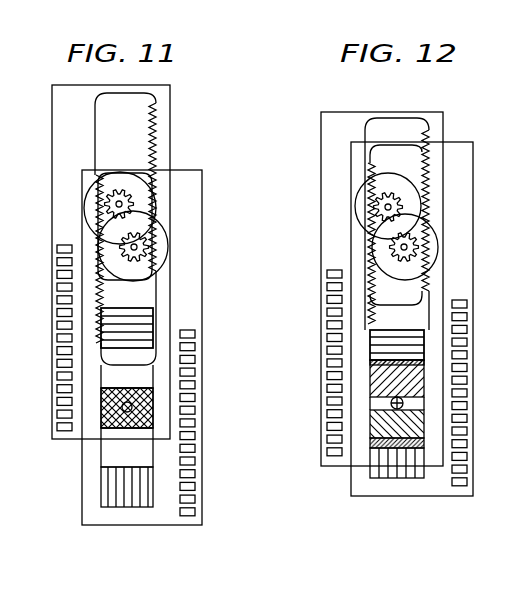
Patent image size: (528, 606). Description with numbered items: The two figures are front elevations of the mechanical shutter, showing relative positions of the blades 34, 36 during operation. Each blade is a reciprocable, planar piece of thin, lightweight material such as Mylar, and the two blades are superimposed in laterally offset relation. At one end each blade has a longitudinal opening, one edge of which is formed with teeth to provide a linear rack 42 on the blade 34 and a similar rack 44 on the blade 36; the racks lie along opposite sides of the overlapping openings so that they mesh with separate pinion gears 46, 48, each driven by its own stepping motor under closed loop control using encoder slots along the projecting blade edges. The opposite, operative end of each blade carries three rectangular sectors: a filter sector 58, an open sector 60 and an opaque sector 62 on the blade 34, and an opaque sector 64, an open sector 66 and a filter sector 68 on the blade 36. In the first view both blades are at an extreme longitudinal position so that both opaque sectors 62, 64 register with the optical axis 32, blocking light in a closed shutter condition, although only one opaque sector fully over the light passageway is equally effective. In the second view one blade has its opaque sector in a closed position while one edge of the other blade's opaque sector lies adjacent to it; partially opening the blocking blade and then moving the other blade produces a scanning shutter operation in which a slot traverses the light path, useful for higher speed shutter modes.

In FIG. 11, the optical axis 32 is at (128, 412).
In FIG. 12, the optical axis 32 is at (390, 403).
In FIG. 11, the blade 34 is at (66, 104).
In FIG. 12, the blade 34 is at (333, 118).
In FIG. 11, the blade 36 is at (187, 178).
In FIG. 12, the blade 36 is at (455, 147).
In FIG. 11, the linear rack 42 is at (150, 115).
In FIG. 12, the linear rack 42 is at (417, 130).
In FIG. 11, the rack 44 is at (104, 290).
In FIG. 12, the rack 44 is at (374, 162).
In FIG. 11, the pinion gear 46 is at (117, 245).
In FIG. 12, the pinion gear 46 is at (403, 252).
In FIG. 11, the pinion gear 48 is at (118, 204).
In FIG. 12, the pinion gear 48 is at (420, 203).
In FIG. 11, the filter sector 58 is at (140, 320).
In FIG. 12, the filter sector 58 is at (389, 346).
In FIG. 11, the open sector 60 is at (145, 372).
In FIG. 11, the opaque sector 62 is at (153, 410).
In FIG. 12, the opaque sector 62 is at (410, 424).
In FIG. 11, the opaque sector 64 is at (183, 408).
In FIG. 12, the opaque sector 64 is at (405, 383).
In FIG. 11, the open sector 66 is at (147, 461).
In FIG. 11, the filter sector 68 is at (130, 490).
In FIG. 12, the filter sector 68 is at (401, 462).